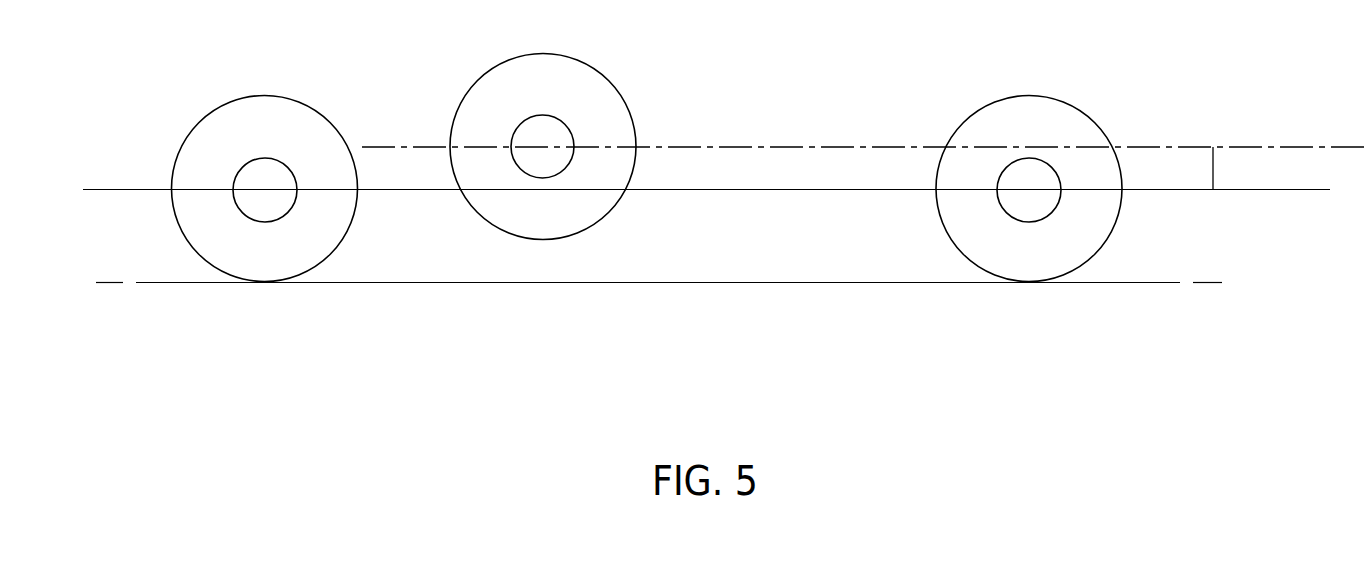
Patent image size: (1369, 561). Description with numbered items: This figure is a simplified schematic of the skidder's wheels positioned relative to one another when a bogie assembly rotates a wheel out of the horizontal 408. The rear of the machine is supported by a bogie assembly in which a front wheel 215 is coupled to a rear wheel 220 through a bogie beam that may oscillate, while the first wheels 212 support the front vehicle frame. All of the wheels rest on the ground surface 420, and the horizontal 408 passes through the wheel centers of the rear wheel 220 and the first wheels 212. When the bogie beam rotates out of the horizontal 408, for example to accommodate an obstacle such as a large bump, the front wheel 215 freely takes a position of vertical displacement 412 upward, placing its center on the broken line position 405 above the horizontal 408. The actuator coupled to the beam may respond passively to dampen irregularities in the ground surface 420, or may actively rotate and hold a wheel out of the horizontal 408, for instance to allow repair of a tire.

The first wheels 212 is at (1053, 261).
The front wheel 215 is at (567, 101).
The rear wheel 220 is at (289, 262).
The broken line position 405 is at (1312, 147).
The horizontal 408 is at (1237, 190).
The vertical displacement 412 is at (1213, 167).
The ground surface 420 is at (702, 361).